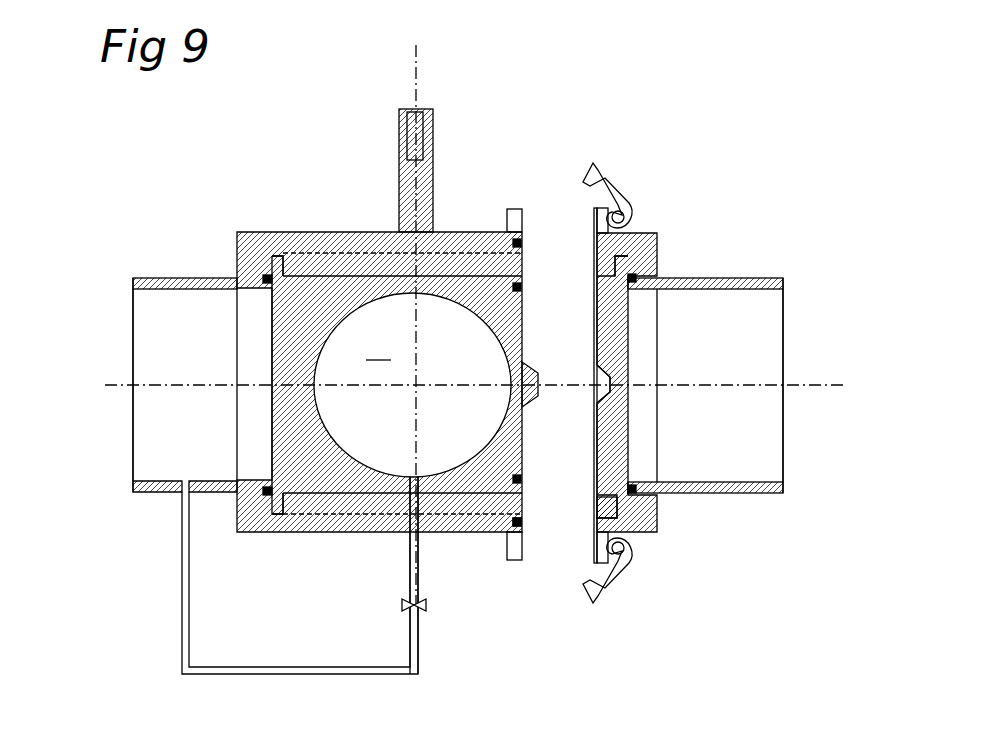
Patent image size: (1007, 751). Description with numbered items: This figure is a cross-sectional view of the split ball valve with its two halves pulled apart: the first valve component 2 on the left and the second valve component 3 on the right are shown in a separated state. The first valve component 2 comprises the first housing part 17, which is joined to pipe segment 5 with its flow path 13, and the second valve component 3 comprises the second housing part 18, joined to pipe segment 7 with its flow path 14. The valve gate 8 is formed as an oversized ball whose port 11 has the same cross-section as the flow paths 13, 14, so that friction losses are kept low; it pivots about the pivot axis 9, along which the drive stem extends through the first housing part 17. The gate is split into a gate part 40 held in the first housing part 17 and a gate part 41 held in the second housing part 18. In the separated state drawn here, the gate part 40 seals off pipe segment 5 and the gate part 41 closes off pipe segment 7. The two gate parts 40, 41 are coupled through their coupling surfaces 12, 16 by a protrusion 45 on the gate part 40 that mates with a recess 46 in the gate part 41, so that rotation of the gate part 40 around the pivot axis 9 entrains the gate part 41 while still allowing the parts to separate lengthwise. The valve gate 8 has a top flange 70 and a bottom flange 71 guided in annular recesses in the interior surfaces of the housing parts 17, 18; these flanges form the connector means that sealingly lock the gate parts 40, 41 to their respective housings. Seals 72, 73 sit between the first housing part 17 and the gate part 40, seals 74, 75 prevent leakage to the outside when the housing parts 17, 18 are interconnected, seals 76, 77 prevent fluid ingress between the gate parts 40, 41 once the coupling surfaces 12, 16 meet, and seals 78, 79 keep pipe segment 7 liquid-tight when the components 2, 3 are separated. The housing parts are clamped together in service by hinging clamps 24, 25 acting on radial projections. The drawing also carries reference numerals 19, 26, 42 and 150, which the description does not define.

The first valve component 2 is at (230, 140).
The second valve component 3 is at (785, 175).
The pipe segment 5 is at (140, 492).
The pipe segment 7 is at (780, 493).
The valve gate 8 is at (262, 478).
The pivot axis 9 is at (420, 64).
The port 11 is at (378, 350).
The coupling surface 12 is at (521, 470).
The flow path 13 is at (150, 457).
The flow path 14 is at (765, 470).
The coupling surface 16 is at (595, 525).
The first housing part 17 is at (360, 232).
The second housing part 18 is at (657, 270).
The seal 19 is at (272, 362).
The hinging clamp 24 is at (622, 192).
The hinging clamp 25 is at (618, 570).
The flow axis 26 is at (832, 385).
The gate part 40 is at (313, 293).
The gate part 41 is at (597, 320).
The drain valve 42 is at (405, 500).
The protrusion 45 is at (530, 396).
The recess 46 is at (600, 385).
The top flange 70 is at (283, 256).
The bottom flange 71 is at (275, 518).
The seal 72 is at (265, 283).
The seal 73 is at (265, 485).
The seal 74 is at (521, 243).
The seal 75 is at (522, 525).
The seal 76 is at (521, 490).
The seal 77 is at (521, 290).
The seal 78 is at (636, 280).
The seal 79 is at (636, 487).
The stem slot 150 is at (413, 140).